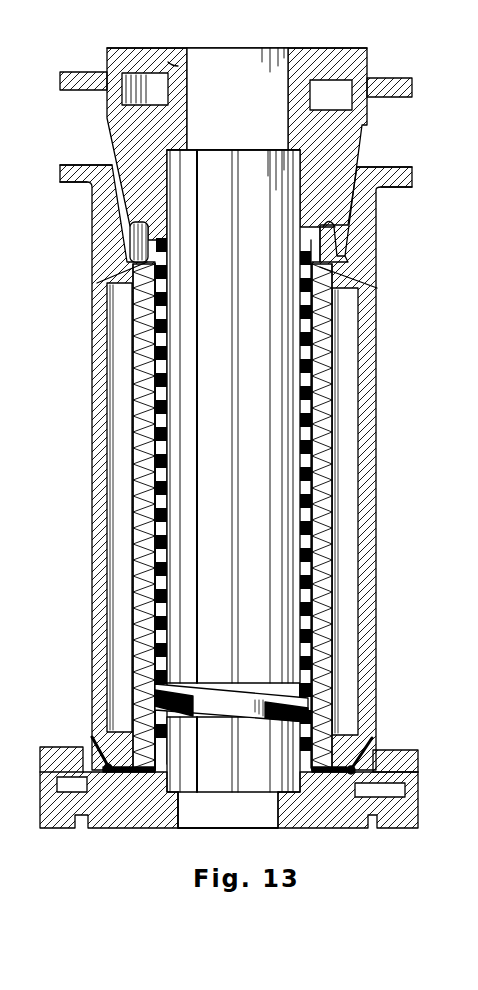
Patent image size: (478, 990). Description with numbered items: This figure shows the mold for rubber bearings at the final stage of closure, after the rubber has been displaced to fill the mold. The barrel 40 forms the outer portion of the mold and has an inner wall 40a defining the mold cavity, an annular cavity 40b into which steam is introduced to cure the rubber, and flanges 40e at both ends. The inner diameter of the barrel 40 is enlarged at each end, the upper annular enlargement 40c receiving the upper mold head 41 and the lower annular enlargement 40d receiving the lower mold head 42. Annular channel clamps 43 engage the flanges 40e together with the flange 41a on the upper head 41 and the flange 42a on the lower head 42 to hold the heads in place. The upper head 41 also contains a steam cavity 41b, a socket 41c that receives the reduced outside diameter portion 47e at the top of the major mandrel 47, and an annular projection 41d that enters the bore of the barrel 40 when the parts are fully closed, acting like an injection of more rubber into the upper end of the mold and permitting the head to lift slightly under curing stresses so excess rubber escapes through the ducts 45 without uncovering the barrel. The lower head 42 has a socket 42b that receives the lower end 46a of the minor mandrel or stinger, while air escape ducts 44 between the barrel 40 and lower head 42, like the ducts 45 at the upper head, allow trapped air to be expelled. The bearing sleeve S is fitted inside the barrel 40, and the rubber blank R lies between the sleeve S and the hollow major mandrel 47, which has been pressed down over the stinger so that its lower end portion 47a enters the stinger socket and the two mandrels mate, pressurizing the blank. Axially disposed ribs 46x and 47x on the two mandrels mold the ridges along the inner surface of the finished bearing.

The barrel 40 is at (95, 373).
The inner wall 40a is at (150, 345).
The annular cavity 40b is at (122, 320).
The upper annular enlargement 40c is at (342, 240).
The lower annular enlargement 40d is at (100, 776).
The flange 40e is at (98, 164).
The upper mold head 41 is at (332, 48).
The flange 41a is at (387, 77).
The cavity 41b is at (152, 82).
The socket 41c is at (170, 64).
The annular projection 41d is at (336, 230).
The lower mold head 42 is at (323, 830).
The flange 42a is at (57, 812).
The socket 42b is at (178, 808).
The annular channel clamp 43 is at (57, 772).
The air escape duct 44 is at (108, 780).
The duct 45 is at (112, 270).
The lower end of minor mandrel 46a is at (207, 828).
The axially disposed rib 46x is at (200, 740).
The major mandrel 47 is at (253, 633).
The lower end portion 47a is at (247, 697).
The reduced outside diameter portion 47e is at (222, 56).
The axially disposed rib 47x is at (184, 178).
The bearing sleeve S is at (150, 392).
The rubber blank R is at (162, 410).